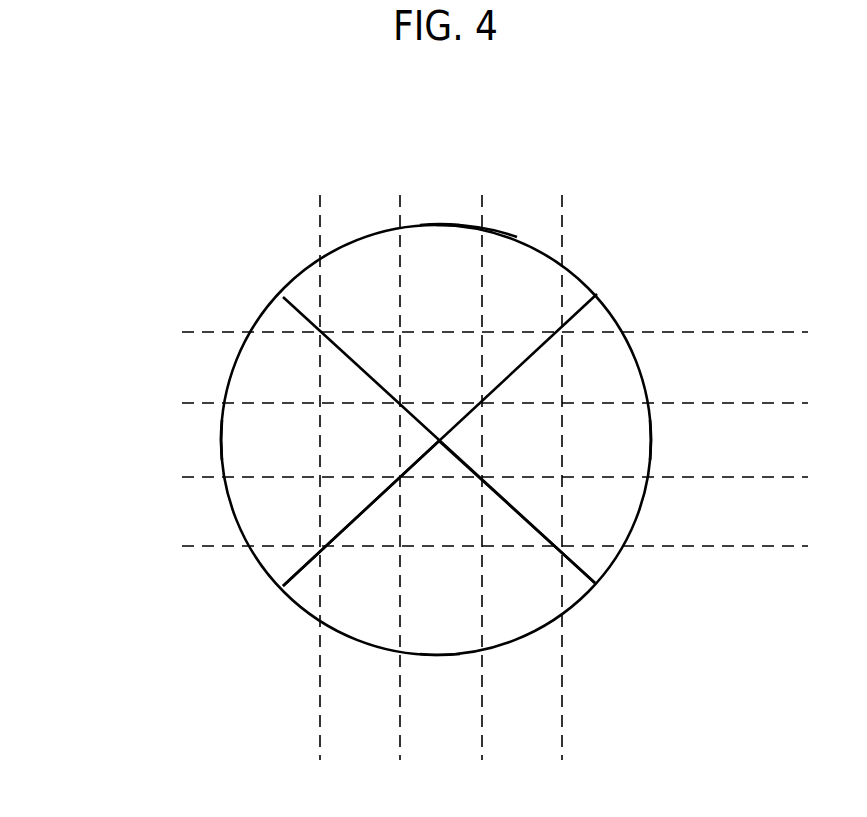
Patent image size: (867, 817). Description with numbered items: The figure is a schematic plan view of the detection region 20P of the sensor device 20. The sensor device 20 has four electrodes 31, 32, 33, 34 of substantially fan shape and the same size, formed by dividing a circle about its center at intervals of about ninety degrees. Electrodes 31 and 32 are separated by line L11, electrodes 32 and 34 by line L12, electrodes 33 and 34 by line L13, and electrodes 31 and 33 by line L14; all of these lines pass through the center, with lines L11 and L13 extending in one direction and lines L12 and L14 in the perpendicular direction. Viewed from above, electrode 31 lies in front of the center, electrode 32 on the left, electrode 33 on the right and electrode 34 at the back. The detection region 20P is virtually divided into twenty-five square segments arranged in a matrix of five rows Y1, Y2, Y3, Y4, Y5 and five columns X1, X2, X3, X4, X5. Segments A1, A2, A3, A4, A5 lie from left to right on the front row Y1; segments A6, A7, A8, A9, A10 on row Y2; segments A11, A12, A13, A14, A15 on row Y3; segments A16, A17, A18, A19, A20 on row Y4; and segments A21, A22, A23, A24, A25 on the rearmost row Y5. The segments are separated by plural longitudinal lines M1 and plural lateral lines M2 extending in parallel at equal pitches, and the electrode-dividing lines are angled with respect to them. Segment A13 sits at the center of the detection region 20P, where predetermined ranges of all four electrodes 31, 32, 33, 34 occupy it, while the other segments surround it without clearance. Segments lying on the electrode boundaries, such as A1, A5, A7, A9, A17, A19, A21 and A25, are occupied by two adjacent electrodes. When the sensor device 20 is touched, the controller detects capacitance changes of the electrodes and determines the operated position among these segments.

The sensor device 20 is at (670, 217).
The detection region 20P is at (517, 237).
The electrode 31 is at (443, 240).
The electrode 32 is at (238, 435).
The electrode 33 is at (628, 440).
The electrode 34 is at (438, 637).
The lines M1 is at (603, 153).
The lines M2 is at (495, 439).
The line L11 is at (287, 297).
The line L12 is at (275, 590).
The line L13 is at (585, 570).
The line L14 is at (597, 295).
The segment A1 is at (241, 306).
The segment A2 is at (356, 279).
The segment A3 is at (438, 279).
The segment A4 is at (519, 279).
The segment A5 is at (648, 304).
The segment A6 is at (269, 369).
The segment A7 is at (374, 353).
The segment A8 is at (437, 371).
The segment A9 is at (504, 358).
The segment A10 is at (606, 371).
The segment A11 is at (267, 439).
The segment A12 is at (355, 439).
The segment A13 is at (415, 448).
The segment A14 is at (520, 441).
The segment A15 is at (606, 441).
The segment A16 is at (269, 513).
The segment A17 is at (372, 534).
The segment A18 is at (440, 513).
The segment A19 is at (508, 531).
The segment A20 is at (606, 511).
The segment A21 is at (260, 644).
The segment A22 is at (356, 596).
The segment A23 is at (438, 596).
The segment A24 is at (519, 596).
The segment A25 is at (611, 619).
The column X1 is at (269, 773).
The column X2 is at (362, 773).
The column X3 is at (442, 773).
The column X4 is at (525, 773).
The column X5 is at (620, 773).
The row Y1 is at (813, 284).
The row Y2 is at (813, 371).
The row Y3 is at (813, 444).
The row Y4 is at (813, 511).
The row Y5 is at (813, 603).